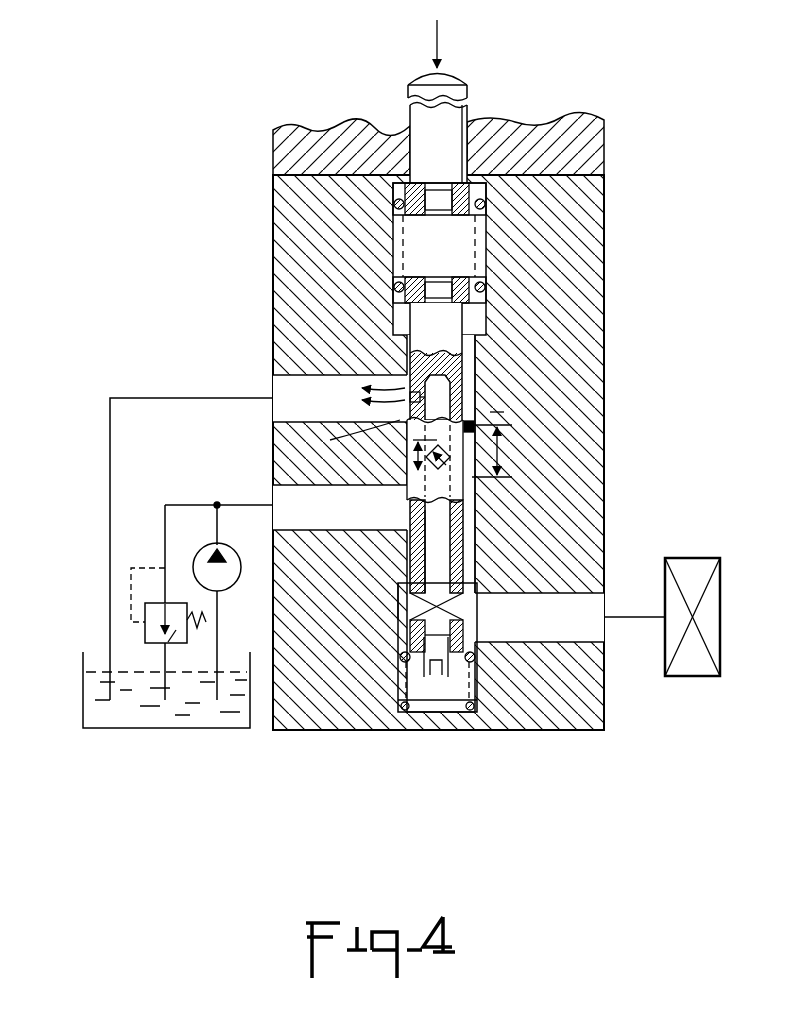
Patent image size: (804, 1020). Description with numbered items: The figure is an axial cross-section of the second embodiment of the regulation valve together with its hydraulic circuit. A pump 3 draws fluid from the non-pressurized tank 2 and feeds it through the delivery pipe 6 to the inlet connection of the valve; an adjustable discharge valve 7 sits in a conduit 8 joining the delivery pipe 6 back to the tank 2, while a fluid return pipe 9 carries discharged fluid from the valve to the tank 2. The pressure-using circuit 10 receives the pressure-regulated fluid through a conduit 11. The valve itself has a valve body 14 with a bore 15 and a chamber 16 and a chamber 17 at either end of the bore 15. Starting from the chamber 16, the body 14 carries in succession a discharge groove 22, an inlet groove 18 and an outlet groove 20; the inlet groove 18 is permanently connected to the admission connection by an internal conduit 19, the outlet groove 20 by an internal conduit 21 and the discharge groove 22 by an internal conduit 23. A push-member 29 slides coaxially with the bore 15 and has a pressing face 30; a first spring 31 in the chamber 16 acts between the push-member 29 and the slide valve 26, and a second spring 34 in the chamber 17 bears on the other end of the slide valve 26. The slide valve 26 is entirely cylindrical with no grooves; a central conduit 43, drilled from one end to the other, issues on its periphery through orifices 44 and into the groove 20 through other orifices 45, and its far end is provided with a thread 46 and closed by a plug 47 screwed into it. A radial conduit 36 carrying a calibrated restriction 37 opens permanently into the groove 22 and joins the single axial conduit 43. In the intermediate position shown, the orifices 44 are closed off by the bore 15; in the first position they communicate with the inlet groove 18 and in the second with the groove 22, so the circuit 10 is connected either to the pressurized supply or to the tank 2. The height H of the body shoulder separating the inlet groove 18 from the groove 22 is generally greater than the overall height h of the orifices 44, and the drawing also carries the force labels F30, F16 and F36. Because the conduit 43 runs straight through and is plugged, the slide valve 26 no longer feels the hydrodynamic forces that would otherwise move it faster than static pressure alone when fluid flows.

The non-pressurized fluid tank 2 is at (83, 662).
The pump 3 is at (233, 567).
The delivery pipe 6 is at (220, 528).
The adjustable discharge valve 7 is at (158, 637).
The conduit 8 is at (165, 518).
The fluid return pipe 9 is at (157, 398).
The pressure-using circuit 10 is at (692, 663).
The conduit 11 is at (637, 620).
The valve body 14 is at (585, 731).
The bore 15 is at (462, 560).
The chamber 16 is at (460, 238).
The chamber 17 is at (425, 688).
The inlet groove 18 is at (462, 512).
The conduit 19 is at (305, 515).
The outlet groove 20 is at (468, 576).
The conduit 21 is at (547, 633).
The discharge groove 22 is at (472, 423).
The conduit 23 is at (307, 372).
The slide valve 26 is at (460, 362).
The push-member 29 is at (457, 163).
The pressing face 30 is at (455, 68).
The first spring 31 is at (482, 288).
The second spring 34 is at (468, 707).
The radial section 36 is at (427, 353).
The calibrated restriction 37 is at (415, 403).
The central conduit 43 is at (430, 545).
The orifices 44 is at (503, 440).
The orifices 45 is at (406, 614).
The thread 46 is at (445, 612).
The plug 47 is at (435, 648).
The force on piston head F30 is at (440, 27).
The force on piston F16 is at (395, 385).
The force on pressure piston F36 is at (344, 440).
The height of shoulder H is at (505, 410).
The overall height of orifices h is at (407, 492).